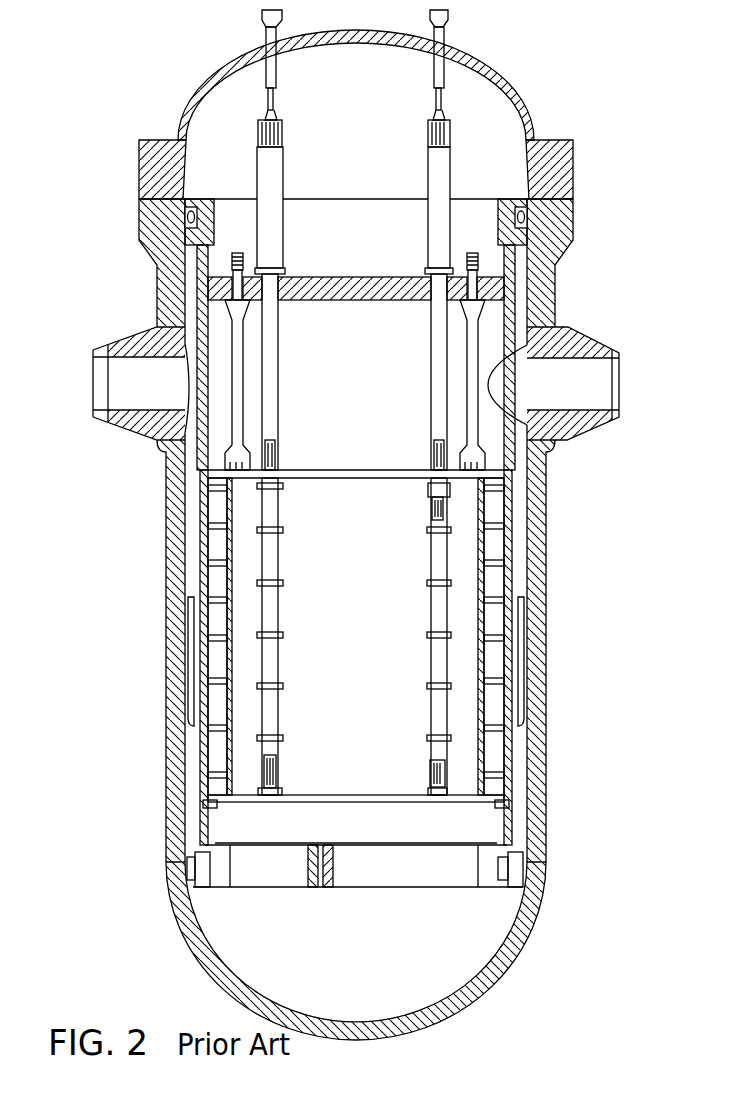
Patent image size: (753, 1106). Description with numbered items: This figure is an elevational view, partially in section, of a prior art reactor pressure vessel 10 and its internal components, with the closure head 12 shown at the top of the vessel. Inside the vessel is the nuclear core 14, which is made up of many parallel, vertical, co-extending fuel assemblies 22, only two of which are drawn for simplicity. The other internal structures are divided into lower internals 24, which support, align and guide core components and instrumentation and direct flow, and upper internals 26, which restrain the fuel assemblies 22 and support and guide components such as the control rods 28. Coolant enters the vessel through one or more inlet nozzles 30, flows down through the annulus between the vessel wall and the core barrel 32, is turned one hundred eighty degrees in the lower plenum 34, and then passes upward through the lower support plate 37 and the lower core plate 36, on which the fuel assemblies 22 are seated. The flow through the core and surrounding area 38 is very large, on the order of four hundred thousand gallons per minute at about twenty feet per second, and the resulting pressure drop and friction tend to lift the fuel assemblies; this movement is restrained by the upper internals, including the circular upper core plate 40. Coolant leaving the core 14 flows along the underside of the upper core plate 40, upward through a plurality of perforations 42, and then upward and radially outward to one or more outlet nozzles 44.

The reactor pressure vessel 10 is at (544, 533).
The closure head 12 is at (573, 168).
The nuclear core 14 is at (374, 633).
The fuel assemblies 22 is at (282, 560).
The lower internals 24 is at (371, 835).
The upper internals 26 is at (372, 364).
The control rods 28 is at (430, 480).
The inlet nozzles 30 is at (124, 338).
The core barrel 32 is at (200, 470).
The lower plenum 34 is at (494, 929).
The lower core plate 36 is at (407, 794).
The lower support plate 37 is at (392, 880).
The core and surrounding area 38 is at (402, 619).
The upper core plate 40 is at (367, 480).
The perforations 42 is at (318, 473).
The outlet nozzles 44 is at (580, 338).